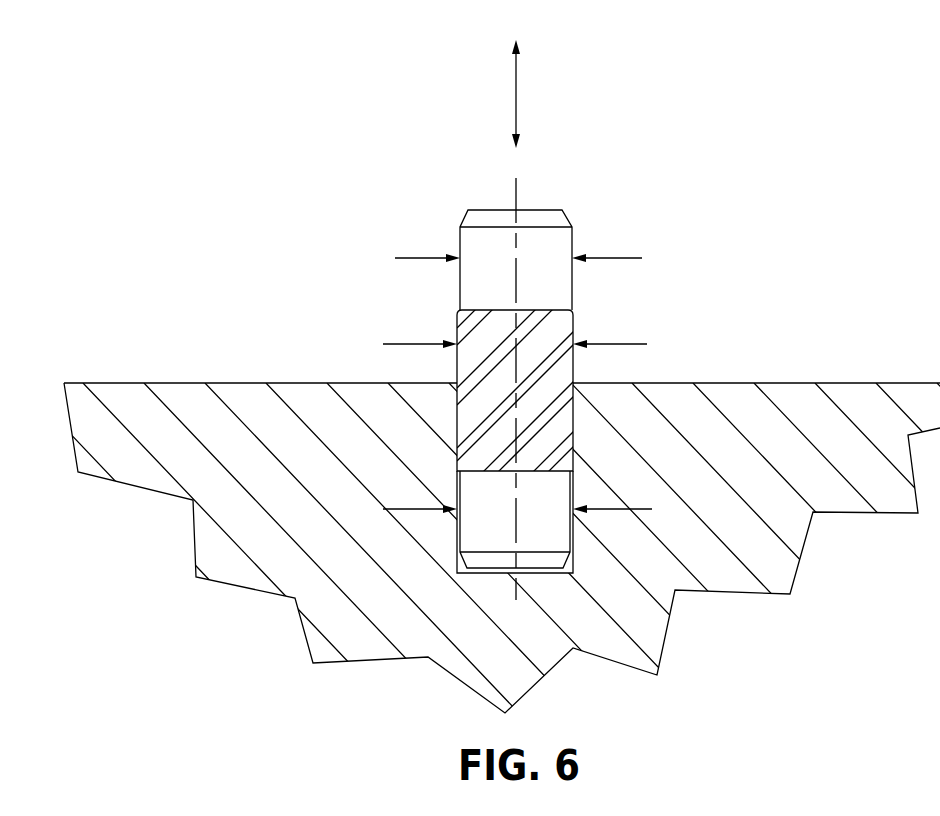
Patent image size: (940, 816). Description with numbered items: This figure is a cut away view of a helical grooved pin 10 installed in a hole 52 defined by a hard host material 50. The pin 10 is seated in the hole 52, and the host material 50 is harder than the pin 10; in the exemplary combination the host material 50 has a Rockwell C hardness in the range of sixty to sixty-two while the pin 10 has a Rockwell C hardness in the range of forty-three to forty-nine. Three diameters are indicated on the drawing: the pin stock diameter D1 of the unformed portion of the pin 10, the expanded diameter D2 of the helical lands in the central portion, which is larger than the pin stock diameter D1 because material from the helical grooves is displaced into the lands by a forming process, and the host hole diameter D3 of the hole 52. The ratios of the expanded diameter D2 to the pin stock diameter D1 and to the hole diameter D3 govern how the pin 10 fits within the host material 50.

The helical grooved pin 10 is at (408, 203).
The host material 50 is at (187, 395).
The hole 52 is at (573, 573).
The pin stock diameter D1 is at (618, 258).
The expanded diameter D2 is at (628, 344).
The host hole diameter D3 is at (640, 511).